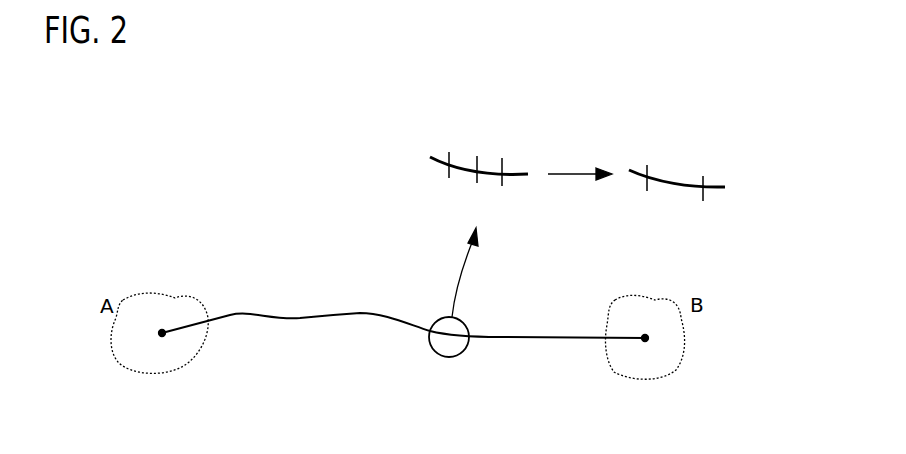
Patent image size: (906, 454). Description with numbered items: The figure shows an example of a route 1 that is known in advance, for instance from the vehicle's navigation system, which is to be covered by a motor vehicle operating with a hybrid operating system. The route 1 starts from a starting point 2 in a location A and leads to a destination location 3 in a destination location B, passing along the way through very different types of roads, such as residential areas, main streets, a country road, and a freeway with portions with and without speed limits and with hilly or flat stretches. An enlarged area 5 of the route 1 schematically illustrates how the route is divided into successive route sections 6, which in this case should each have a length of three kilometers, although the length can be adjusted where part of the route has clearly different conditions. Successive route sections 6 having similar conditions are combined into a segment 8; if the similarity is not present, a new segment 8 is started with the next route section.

The route 1 is at (320, 318).
The starting point 2 is at (162, 333).
The destination location 3 is at (645, 338).
The enlarged area 5 is at (440, 356).
The route sections 6 is at (465, 167).
The segment 8 is at (680, 181).